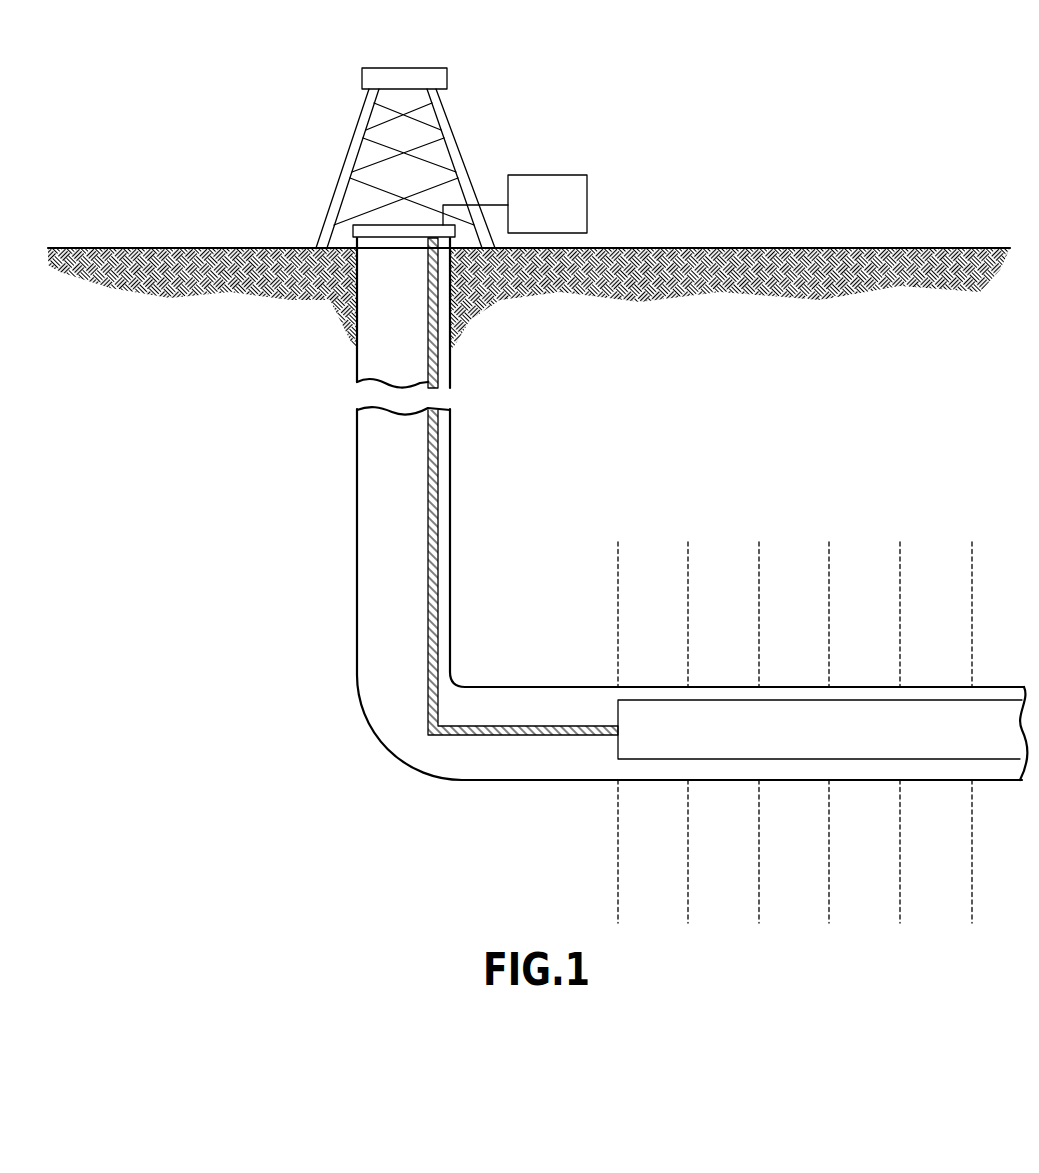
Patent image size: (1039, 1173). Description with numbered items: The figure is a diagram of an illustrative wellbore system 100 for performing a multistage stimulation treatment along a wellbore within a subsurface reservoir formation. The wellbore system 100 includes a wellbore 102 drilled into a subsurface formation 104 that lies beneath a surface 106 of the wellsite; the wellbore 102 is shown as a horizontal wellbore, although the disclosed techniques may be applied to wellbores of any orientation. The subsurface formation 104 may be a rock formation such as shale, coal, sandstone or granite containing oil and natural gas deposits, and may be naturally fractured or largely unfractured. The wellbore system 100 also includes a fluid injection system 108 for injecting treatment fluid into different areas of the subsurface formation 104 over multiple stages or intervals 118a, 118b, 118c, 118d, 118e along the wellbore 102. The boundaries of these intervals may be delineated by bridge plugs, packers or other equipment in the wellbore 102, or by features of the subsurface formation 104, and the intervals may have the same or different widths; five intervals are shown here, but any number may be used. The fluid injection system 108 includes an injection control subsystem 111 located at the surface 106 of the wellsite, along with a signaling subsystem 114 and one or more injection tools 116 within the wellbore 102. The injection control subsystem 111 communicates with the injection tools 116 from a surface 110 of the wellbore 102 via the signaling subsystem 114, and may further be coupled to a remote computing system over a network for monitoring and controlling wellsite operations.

The wellbore system 100 is at (308, 748).
The wellbore 102 is at (558, 702).
The subsurface formation 104 is at (835, 455).
The surface 106 is at (788, 248).
The fluid injection system 108 is at (312, 132).
The surface of the wellbore 110 is at (372, 226).
The injection control subsystem 111 is at (567, 218).
The signaling subsystem 114 is at (428, 580).
The injection tool 116 is at (840, 744).
The interval 118a is at (681, 569).
The interval 118b is at (752, 569).
The interval 118c is at (822, 569).
The interval 118d is at (893, 569).
The interval 118e is at (964, 569).